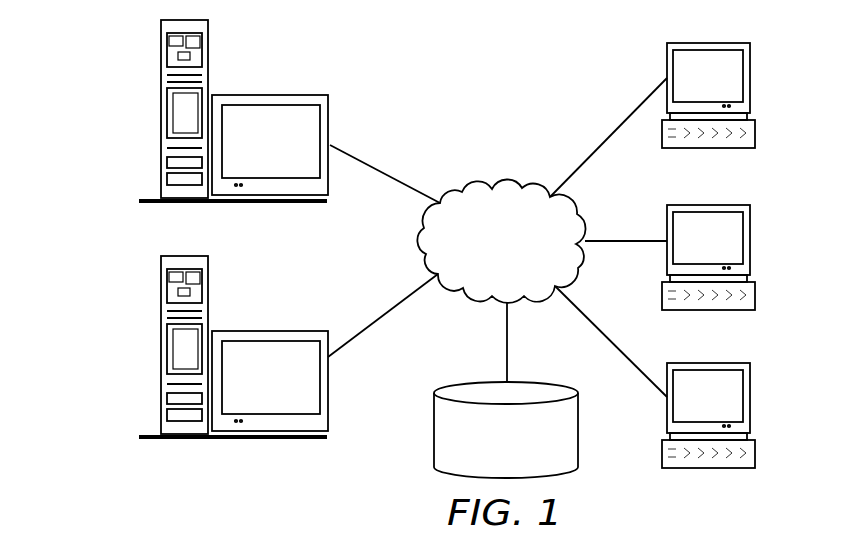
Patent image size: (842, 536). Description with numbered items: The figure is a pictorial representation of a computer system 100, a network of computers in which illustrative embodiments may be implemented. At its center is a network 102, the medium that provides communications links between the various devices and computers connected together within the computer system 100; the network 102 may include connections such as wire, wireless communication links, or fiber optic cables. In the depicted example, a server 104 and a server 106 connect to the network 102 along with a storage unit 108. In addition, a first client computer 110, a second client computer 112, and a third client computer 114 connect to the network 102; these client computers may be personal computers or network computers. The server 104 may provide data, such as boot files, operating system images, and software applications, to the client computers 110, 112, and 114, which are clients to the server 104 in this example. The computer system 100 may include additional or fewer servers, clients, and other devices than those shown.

The computer system 100 is at (566, 59).
The network 102 is at (477, 187).
The server 104 is at (160, 112).
The server 106 is at (160, 349).
The storage unit 108 is at (433, 438).
The first client computer 110 is at (752, 80).
The second client computer 112 is at (752, 240).
The third client computer 114 is at (752, 400).